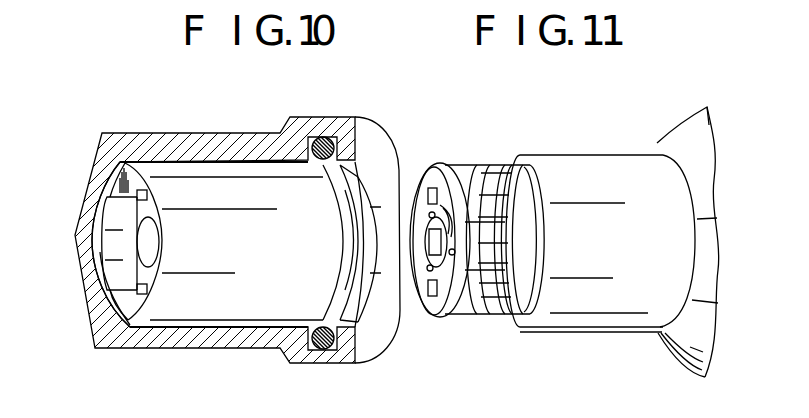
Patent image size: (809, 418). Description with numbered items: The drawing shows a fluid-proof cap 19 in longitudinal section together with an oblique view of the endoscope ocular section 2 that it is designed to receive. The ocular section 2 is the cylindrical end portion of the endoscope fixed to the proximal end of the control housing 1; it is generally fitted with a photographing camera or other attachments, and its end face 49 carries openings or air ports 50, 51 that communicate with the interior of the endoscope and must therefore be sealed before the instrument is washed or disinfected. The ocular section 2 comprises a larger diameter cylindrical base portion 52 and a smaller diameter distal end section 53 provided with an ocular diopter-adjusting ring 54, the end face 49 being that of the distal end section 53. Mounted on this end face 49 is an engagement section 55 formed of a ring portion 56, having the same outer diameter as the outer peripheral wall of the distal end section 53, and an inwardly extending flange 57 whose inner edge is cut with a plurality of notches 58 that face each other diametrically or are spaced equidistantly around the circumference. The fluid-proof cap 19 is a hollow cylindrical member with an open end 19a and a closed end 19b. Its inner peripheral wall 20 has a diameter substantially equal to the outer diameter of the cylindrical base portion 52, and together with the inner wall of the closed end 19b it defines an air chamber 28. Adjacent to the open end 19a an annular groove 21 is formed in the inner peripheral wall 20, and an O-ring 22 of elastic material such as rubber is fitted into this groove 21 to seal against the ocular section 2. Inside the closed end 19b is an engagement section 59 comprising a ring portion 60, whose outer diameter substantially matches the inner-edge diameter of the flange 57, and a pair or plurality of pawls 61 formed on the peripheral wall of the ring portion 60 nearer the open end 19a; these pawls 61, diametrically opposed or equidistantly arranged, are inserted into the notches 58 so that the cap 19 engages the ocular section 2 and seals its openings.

In FIG. 11, the control housing 1 is at (706, 165).
In FIG. 11, the ocular section 2 is at (596, 152).
In FIG. 10, the fluid-proof cap 19 is at (233, 133).
In FIG. 10, the open end 19a is at (377, 340).
In FIG. 10, the closed end 19b is at (113, 184).
In FIG. 10, the inner peripheral wall 20 is at (227, 300).
In FIG. 10, the annular groove 21 is at (311, 350).
In FIG. 10, the O-ring 22 is at (322, 138).
In FIG. 10, the air chamber 28 is at (227, 232).
In FIG. 11, the end face 49 is at (447, 277).
In FIG. 11, the opening 50 is at (467, 198).
In FIG. 11, the opening 51 is at (420, 207).
In FIG. 11, the cylindrical base portion 52 is at (633, 304).
In FIG. 11, the distal end section 53 is at (507, 322).
In FIG. 11, the ocular diopter-adjusting ring 54 is at (493, 165).
In FIG. 11, the engagement section 55 is at (420, 290).
In FIG. 11, the ring portion 56 is at (440, 175).
In FIG. 11, the flange 57 is at (470, 318).
In FIG. 11, the notches 58 is at (430, 188).
In FIG. 10, the engagement section 59 is at (130, 327).
In FIG. 10, the ring portion 60 is at (123, 263).
In FIG. 10, the pawls 61 is at (147, 193).